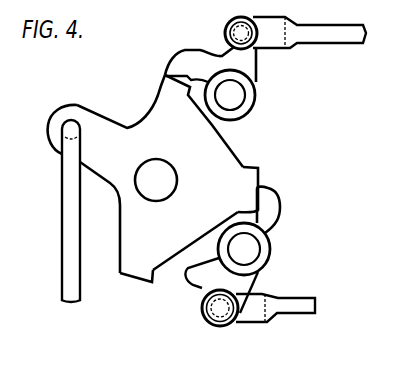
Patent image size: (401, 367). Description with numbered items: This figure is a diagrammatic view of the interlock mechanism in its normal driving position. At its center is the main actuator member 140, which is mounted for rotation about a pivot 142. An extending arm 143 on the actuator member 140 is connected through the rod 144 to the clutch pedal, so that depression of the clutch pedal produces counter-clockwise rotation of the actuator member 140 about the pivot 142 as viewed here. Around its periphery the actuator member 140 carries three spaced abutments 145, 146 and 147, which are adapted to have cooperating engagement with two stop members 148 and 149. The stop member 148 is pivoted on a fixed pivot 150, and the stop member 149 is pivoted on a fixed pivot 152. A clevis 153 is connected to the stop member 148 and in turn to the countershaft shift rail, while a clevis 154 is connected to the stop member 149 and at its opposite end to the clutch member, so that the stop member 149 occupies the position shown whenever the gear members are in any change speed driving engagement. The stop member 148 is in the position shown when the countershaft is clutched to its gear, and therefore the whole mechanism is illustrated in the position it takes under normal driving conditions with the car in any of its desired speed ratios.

The main actuator member 140 is at (131, 217).
The pivot 142 is at (153, 170).
The extending arm 143 is at (78, 106).
The rod 144 is at (62, 230).
The abutment 145 is at (142, 283).
The abutment 146 is at (258, 178).
The abutment 147 is at (165, 75).
The stop member 148 is at (279, 227).
The stop member 149 is at (258, 62).
The fixed pivot 150 is at (248, 253).
The fixed pivot 152 is at (238, 95).
The clevis 153 is at (293, 312).
The clevis 154 is at (333, 38).